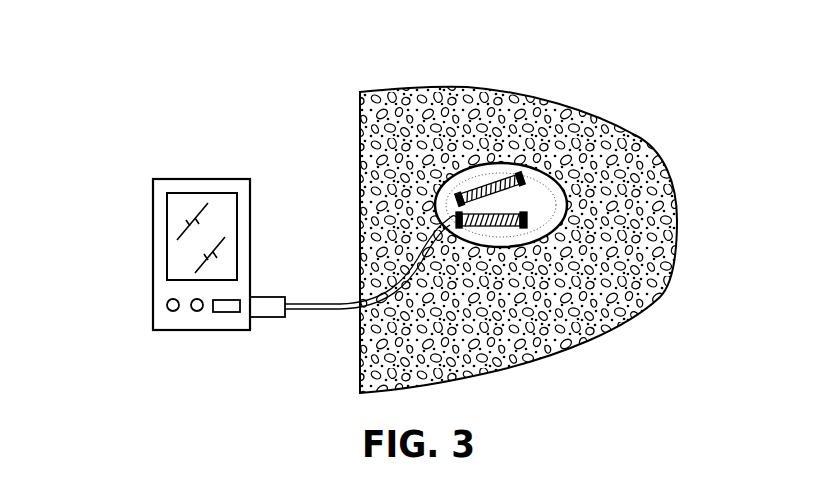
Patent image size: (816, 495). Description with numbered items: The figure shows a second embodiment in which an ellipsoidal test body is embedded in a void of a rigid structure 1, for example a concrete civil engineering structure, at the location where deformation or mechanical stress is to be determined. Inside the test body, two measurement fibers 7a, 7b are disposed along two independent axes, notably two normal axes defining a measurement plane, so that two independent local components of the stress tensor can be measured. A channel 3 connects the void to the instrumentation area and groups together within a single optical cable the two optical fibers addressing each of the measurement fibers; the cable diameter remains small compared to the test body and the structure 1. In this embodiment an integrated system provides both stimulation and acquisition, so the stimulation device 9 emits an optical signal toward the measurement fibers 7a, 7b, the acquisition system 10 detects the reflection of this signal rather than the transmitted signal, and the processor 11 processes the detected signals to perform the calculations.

The structure 1 is at (370, 145).
The channel 3 is at (414, 257).
The measurement fiber 7a is at (530, 210).
The measurement fiber 7b is at (484, 196).
The stimulation device 9 is at (197, 311).
The acquisition system 10 is at (276, 275).
The processor 11 is at (153, 292).